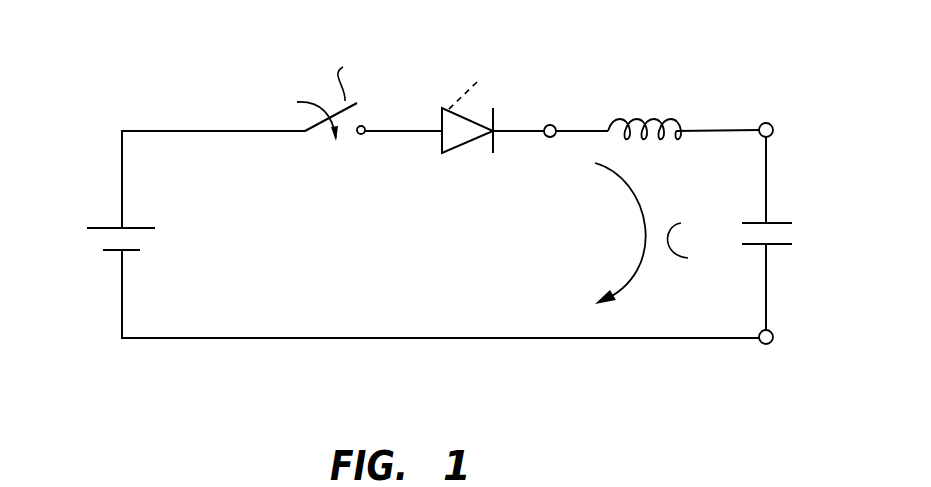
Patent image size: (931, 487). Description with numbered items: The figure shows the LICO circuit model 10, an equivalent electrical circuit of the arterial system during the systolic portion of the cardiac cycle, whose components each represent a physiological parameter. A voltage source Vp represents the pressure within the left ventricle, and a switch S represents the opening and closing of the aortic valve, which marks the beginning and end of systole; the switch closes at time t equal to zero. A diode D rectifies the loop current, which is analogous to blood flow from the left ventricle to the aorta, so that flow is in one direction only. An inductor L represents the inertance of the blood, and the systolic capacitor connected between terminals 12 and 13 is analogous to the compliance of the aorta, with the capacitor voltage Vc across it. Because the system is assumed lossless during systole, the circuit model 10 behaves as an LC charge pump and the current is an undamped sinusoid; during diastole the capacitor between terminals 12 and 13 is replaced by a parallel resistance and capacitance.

The LICO circuit model 10 is at (532, 80).
The terminal 12 is at (772, 123).
The terminal 13 is at (772, 341).